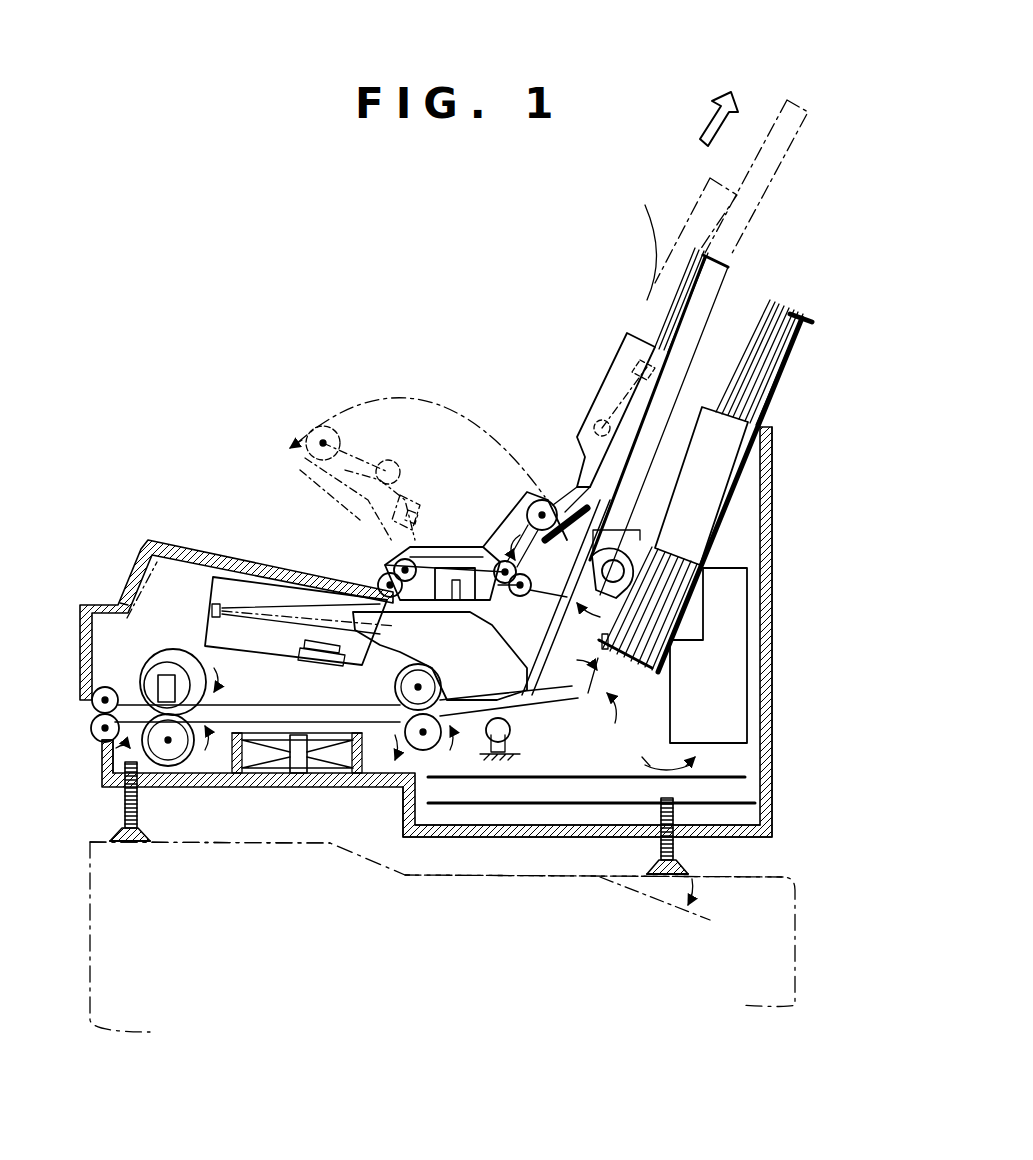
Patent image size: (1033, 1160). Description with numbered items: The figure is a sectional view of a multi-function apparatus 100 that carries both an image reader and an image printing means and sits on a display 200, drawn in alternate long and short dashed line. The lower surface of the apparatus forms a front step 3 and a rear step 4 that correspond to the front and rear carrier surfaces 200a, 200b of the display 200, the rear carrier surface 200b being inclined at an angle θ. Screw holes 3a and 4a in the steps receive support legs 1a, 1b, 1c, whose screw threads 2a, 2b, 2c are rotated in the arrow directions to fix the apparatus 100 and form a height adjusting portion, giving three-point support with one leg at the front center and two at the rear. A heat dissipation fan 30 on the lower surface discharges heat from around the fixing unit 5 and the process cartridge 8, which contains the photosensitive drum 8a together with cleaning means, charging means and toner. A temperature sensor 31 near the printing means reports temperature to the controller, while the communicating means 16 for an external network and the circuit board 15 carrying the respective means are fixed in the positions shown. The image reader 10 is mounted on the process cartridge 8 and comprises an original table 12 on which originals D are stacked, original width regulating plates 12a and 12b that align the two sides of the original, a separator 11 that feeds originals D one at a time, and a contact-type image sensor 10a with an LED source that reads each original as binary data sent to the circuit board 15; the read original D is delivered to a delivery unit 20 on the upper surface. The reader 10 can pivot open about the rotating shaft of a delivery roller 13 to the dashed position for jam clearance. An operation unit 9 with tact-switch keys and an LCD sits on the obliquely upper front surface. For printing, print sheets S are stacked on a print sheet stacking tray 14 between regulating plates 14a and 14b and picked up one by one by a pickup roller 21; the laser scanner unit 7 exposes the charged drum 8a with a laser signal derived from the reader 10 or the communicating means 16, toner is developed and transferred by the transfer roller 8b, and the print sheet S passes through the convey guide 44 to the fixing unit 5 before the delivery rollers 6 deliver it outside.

The multi-function apparatus 100 is at (343, 392).
The support leg 1a is at (123, 847).
The support leg 1b is at (657, 878).
The support leg 1c is at (655, 931).
The screw thread 2a is at (156, 828).
The screw thread 2b is at (682, 852).
The screw thread 2c is at (724, 923).
The front step 3 is at (197, 788).
The screw hole 3a is at (113, 787).
The rear step 4 is at (587, 838).
The screw hole 4a is at (640, 828).
The fixing unit 5 is at (178, 655).
The delivery rollers 6 is at (100, 742).
The laser scanner unit 7 is at (240, 592).
The process cartridge 8 is at (408, 665).
The photosensitive drum 8a is at (412, 735).
The transfer roller 8b is at (423, 750).
The operation unit 9 is at (128, 575).
The image reader 10 is at (459, 568).
The contact-type image sensor 10a is at (457, 578).
The separator 11 is at (541, 500).
The original table 12 is at (711, 281).
The original width regulating plate 12a is at (619, 343).
The original width regulating plate 12b is at (588, 378).
The delivery roller 13 is at (388, 575).
The print sheet stacking tray 14 is at (773, 398).
The regulating plate 14a is at (715, 465).
The regulating plate 14b is at (711, 613).
The circuit board 15 is at (513, 795).
The communicating means 16 is at (732, 623).
The delivery unit 20 is at (282, 538).
The pickup roller 21 is at (613, 528).
The heat dissipation fan 30 is at (277, 780).
The temperature sensor 31 is at (512, 741).
The convey guide 44 is at (214, 788).
The display 200 is at (773, 870).
The front carrier surface 200a is at (213, 836).
The rear carrier surface 200b is at (548, 860).
The original D is at (646, 239).
The print sheet S is at (773, 305).